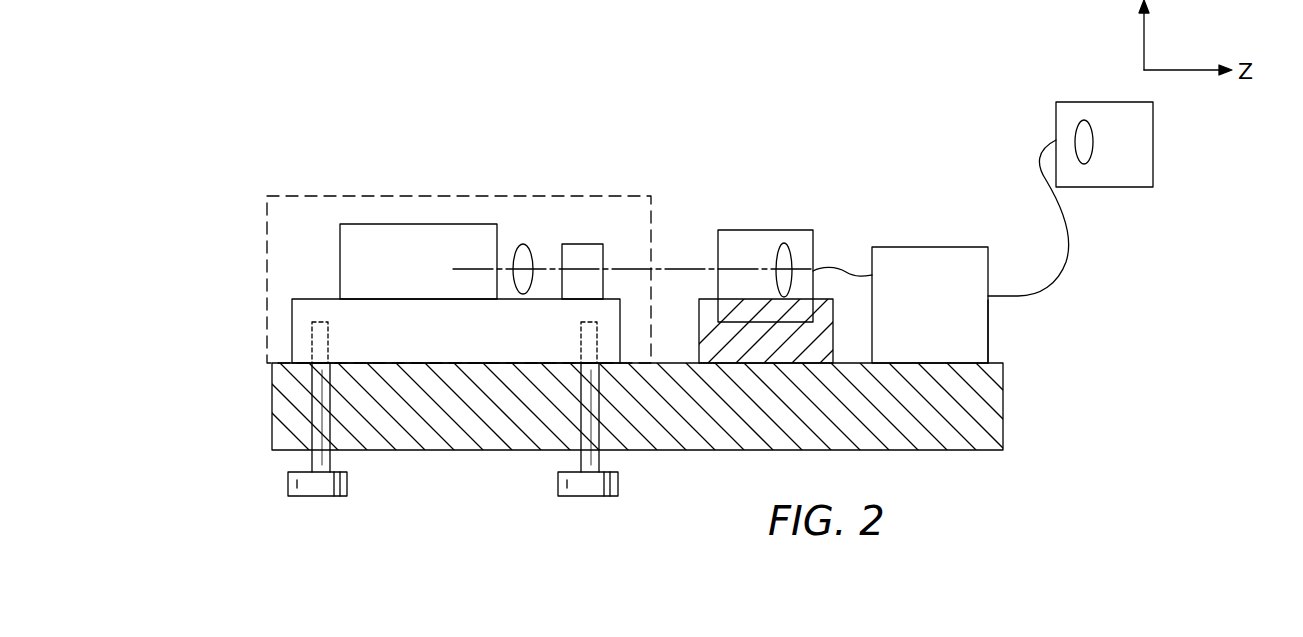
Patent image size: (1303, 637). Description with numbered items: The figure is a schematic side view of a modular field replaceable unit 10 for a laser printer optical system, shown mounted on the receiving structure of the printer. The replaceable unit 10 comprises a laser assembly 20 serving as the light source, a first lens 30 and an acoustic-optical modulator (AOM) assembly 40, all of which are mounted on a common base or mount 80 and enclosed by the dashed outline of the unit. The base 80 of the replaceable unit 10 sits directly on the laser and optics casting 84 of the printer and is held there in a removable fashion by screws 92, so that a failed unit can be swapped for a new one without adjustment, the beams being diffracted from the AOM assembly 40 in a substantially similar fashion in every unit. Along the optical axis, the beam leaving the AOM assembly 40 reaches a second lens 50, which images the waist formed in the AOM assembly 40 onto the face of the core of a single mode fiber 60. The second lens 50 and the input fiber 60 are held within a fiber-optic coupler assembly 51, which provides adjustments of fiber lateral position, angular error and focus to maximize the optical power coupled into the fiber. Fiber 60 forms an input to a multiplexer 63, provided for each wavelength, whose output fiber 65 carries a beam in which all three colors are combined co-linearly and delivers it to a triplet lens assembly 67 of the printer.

The modular field replaceable unit 10 is at (322, 194).
The laser assembly 20 is at (395, 222).
The first lens 30 is at (522, 244).
The acoustic-optical modulator assembly 40 is at (583, 244).
The second lens 50 is at (790, 250).
The fiber-optic coupler assembly 51 is at (759, 230).
The single mode fiber 60 is at (841, 270).
The multiplexer 63 is at (988, 320).
The output fiber 65 is at (1064, 265).
The triplet lens assembly 67 is at (1153, 172).
The base 80 is at (292, 325).
The laser and optics casting 84 is at (1003, 418).
The screws 92 is at (347, 485).